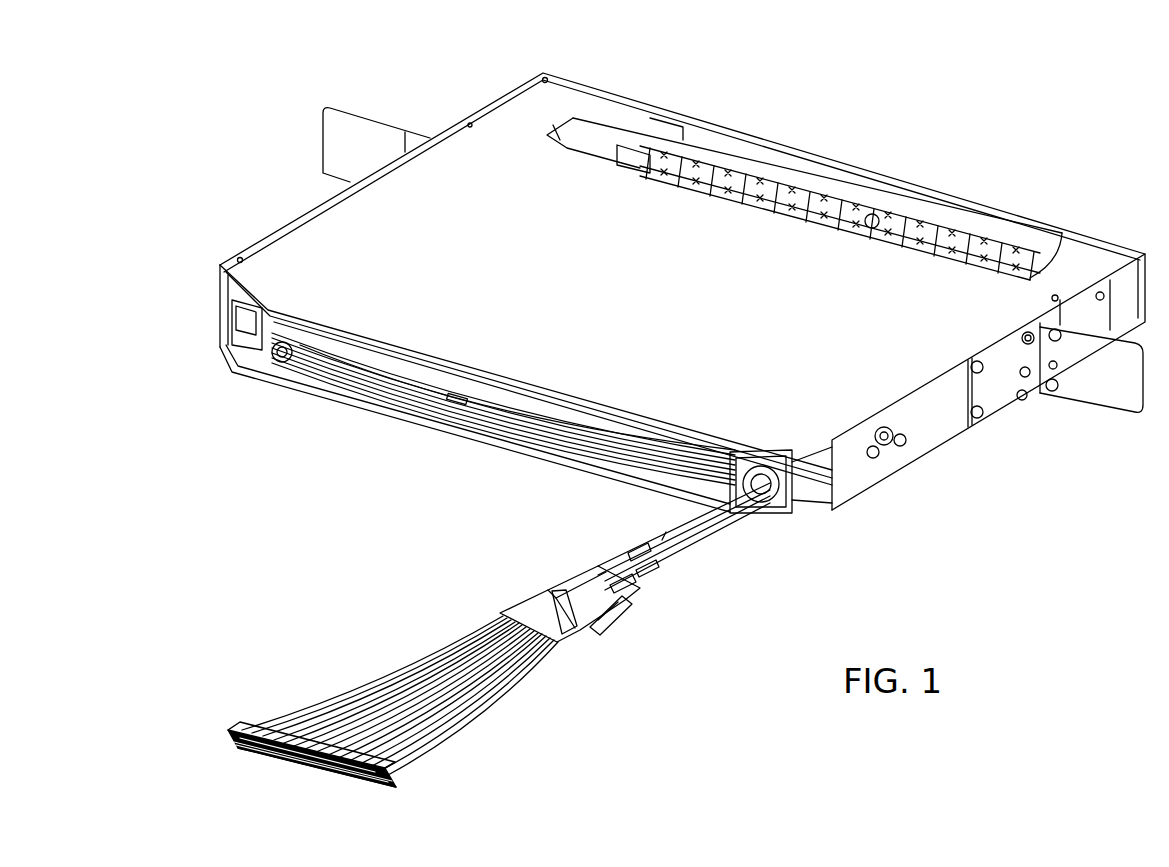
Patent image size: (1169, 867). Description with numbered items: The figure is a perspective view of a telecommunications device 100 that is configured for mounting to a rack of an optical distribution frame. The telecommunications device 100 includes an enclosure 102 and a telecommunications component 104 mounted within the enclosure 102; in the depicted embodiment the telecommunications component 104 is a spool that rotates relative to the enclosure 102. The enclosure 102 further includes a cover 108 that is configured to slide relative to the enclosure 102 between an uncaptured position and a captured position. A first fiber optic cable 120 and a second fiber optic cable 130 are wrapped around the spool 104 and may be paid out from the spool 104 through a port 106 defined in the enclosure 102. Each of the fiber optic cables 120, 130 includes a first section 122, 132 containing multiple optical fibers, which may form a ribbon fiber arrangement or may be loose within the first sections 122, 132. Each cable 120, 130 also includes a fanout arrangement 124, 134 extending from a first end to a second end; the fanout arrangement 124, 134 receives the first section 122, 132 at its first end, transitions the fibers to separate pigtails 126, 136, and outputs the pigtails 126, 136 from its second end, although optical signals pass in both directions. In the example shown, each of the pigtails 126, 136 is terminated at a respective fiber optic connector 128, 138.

The telecommunications device 100 is at (295, 203).
The enclosure 102 is at (988, 382).
The telecommunications component (spool) 104 is at (503, 409).
The port 106 is at (794, 505).
The cover 108 is at (603, 268).
The first fiber optic cable 120 is at (590, 563).
The first section of the first fiber optic cable 122 is at (669, 529).
The fanout arrangement of the first fiber optic cable 124 is at (533, 601).
The pigtails of the first fiber optic cable 126 is at (384, 682).
The fiber optic connector of the first fiber optic cable 128 is at (286, 728).
The second fiber optic cable 130 is at (633, 603).
The first section of the second fiber optic cable 132 is at (687, 546).
The fanout arrangement of the second fiber optic cable 134 is at (613, 635).
The pigtails of the second fiber optic cable 136 is at (440, 702).
The fiber optic connector of the second fiber optic cable 138 is at (365, 774).